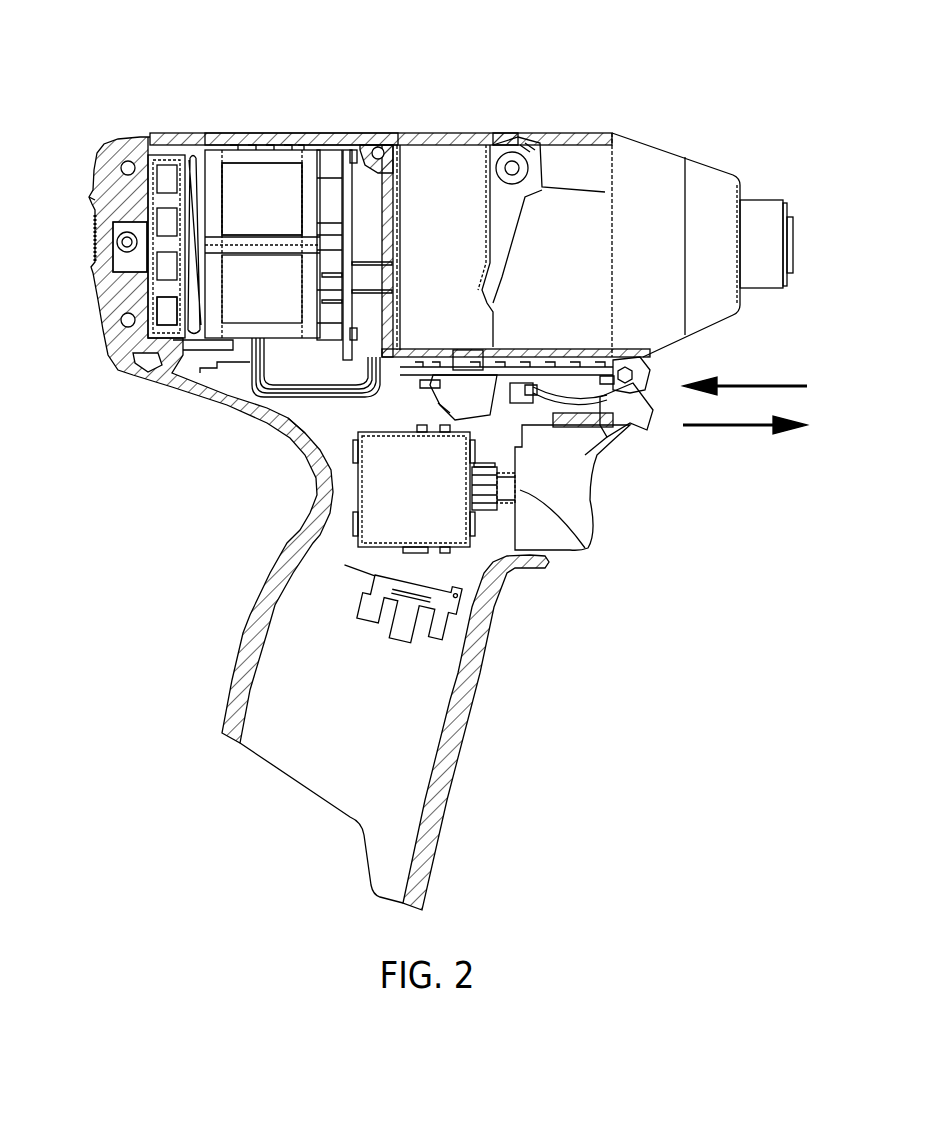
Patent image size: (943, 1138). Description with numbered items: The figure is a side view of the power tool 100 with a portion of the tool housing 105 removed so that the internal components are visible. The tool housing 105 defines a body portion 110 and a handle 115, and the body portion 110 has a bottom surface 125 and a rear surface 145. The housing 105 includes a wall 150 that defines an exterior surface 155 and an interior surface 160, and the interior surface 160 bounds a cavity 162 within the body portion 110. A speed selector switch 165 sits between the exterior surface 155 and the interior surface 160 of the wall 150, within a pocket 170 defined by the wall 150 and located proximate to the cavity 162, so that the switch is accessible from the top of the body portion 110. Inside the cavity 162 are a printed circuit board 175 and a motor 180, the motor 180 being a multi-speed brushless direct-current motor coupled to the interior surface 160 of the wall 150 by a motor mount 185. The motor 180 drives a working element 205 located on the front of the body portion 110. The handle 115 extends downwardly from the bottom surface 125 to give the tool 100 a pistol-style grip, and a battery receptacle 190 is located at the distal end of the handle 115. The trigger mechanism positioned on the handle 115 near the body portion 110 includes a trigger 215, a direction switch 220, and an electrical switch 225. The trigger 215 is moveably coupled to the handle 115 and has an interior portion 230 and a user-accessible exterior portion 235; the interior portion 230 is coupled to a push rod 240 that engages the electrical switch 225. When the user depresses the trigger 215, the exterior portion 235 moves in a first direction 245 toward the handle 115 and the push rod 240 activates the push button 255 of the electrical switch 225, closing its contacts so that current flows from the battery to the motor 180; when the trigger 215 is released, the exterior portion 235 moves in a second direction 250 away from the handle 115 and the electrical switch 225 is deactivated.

The power tool 100 is at (765, 140).
The tool housing 105 is at (100, 150).
The body portion 110 is at (660, 133).
The handle 115 is at (228, 690).
The bottom surface 125 is at (280, 433).
The rear surface 145 is at (88, 193).
The wall 150 is at (398, 128).
The exterior surface 155 is at (327, 130).
The interior surface 160 is at (358, 131).
The cavity 162 is at (158, 308).
The speed selector switch 165 is at (255, 138).
The pocket 170 is at (188, 132).
The printed circuit board 175 is at (230, 373).
The motor 180 is at (248, 190).
The motor mount 185 is at (97, 218).
The battery receptacle 190 is at (267, 808).
The working element 205 is at (787, 280).
The trigger 215 is at (567, 503).
The direction switch 220 is at (487, 385).
The electrical switch 225 is at (398, 487).
The interior portion 230 is at (520, 490).
The exterior portion 235 is at (605, 453).
The push rod 240 is at (507, 497).
The first direction 245 is at (753, 383).
The second direction 250 is at (740, 430).
The push button 255 is at (485, 490).